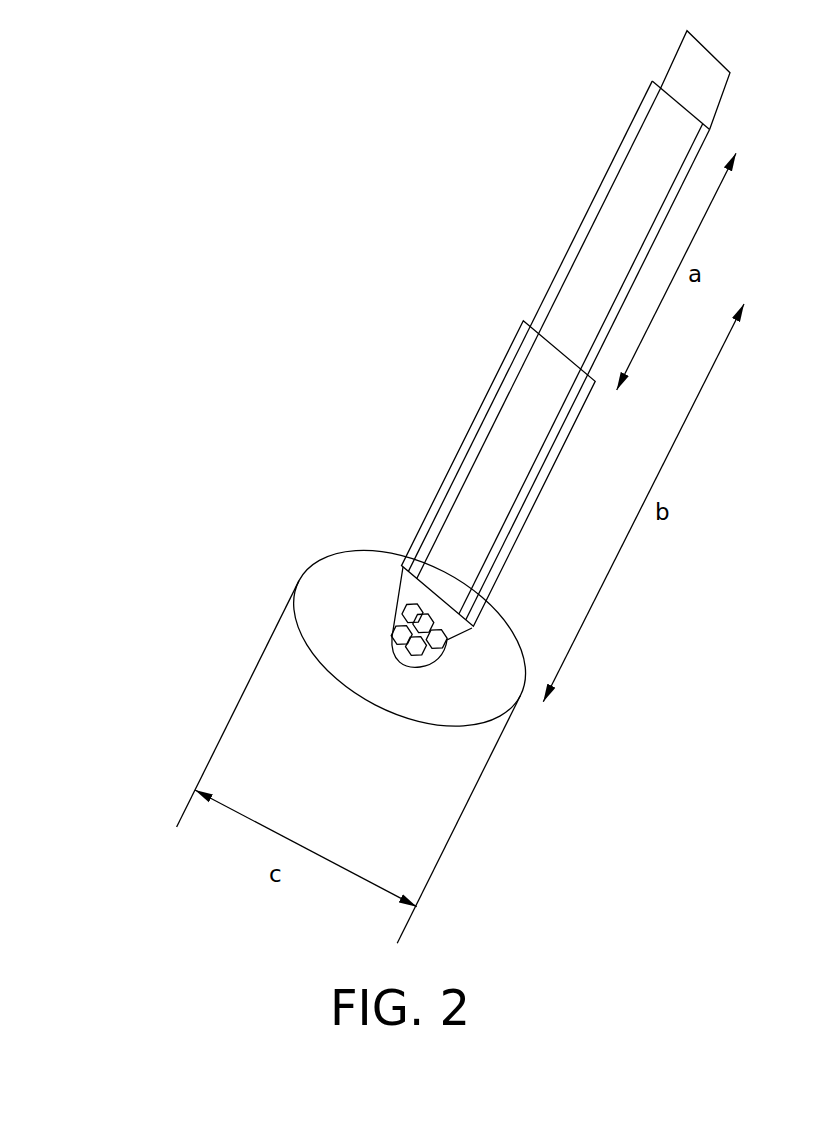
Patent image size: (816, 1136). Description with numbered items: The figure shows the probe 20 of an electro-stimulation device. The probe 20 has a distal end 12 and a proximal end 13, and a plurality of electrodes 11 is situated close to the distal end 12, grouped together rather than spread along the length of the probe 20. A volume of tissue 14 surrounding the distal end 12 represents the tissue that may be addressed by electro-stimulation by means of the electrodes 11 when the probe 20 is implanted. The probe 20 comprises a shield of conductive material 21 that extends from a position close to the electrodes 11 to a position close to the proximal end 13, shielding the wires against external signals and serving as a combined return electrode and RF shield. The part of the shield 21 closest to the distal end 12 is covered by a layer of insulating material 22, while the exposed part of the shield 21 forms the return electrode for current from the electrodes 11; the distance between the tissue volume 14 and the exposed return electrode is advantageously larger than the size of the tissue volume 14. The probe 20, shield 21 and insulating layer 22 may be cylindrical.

The electrodes 11 is at (420, 653).
The distal end 12 is at (385, 592).
The proximal end 13 is at (647, 55).
The volume of tissue 14 is at (353, 642).
The probe 20 is at (240, 140).
The shield of conductive material 21 is at (565, 245).
The layer of insulating material 22 is at (516, 323).